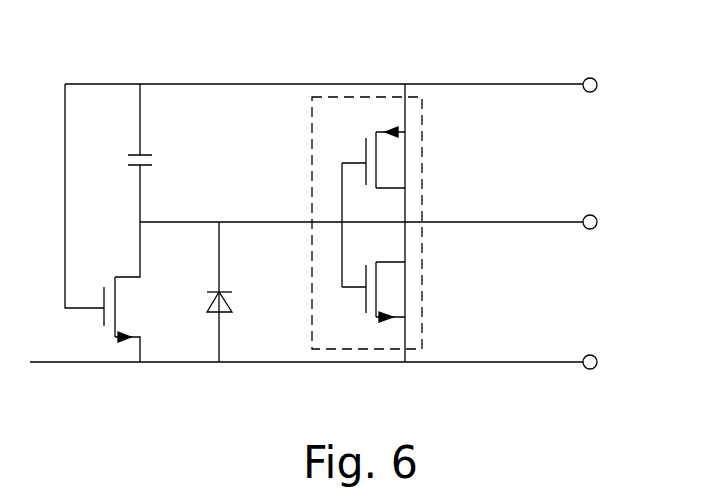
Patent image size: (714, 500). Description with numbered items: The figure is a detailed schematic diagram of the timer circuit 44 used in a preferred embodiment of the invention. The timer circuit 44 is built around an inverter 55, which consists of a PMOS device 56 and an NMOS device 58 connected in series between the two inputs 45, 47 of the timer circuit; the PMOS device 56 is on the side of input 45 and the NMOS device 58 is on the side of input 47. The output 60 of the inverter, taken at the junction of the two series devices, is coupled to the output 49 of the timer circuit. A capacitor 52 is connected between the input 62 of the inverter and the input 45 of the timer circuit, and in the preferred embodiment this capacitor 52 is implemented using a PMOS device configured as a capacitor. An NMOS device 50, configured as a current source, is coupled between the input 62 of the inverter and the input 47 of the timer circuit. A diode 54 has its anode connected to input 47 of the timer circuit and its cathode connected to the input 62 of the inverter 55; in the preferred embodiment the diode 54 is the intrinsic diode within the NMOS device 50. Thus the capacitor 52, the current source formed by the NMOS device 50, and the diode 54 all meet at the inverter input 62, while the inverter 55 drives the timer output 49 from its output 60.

The timer circuit 44 is at (386, 59).
The input of the timer circuit 45 is at (584, 80).
The input of the timer circuit 47 is at (598, 360).
The output of the timer circuit 49 is at (598, 218).
The NMOS device 50 is at (118, 310).
The capacitor 52 is at (152, 160).
The diode 54 is at (219, 333).
The inverter 55 is at (350, 97).
The PMOS device 56 is at (385, 155).
The NMOS device 58 is at (383, 290).
The output of the inverter 60 is at (412, 217).
The input of the inverter 62 is at (322, 198).